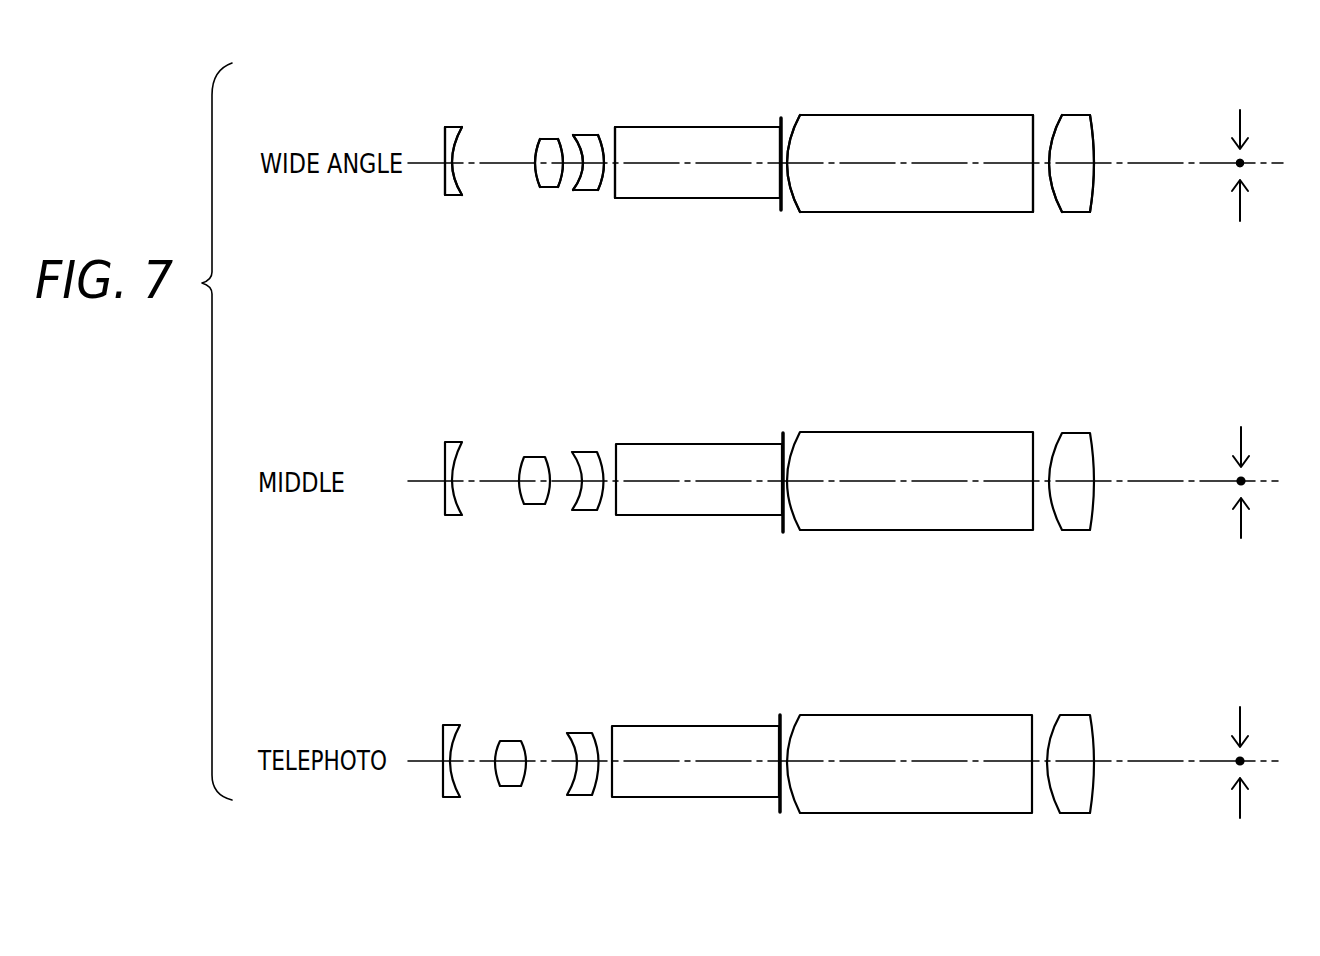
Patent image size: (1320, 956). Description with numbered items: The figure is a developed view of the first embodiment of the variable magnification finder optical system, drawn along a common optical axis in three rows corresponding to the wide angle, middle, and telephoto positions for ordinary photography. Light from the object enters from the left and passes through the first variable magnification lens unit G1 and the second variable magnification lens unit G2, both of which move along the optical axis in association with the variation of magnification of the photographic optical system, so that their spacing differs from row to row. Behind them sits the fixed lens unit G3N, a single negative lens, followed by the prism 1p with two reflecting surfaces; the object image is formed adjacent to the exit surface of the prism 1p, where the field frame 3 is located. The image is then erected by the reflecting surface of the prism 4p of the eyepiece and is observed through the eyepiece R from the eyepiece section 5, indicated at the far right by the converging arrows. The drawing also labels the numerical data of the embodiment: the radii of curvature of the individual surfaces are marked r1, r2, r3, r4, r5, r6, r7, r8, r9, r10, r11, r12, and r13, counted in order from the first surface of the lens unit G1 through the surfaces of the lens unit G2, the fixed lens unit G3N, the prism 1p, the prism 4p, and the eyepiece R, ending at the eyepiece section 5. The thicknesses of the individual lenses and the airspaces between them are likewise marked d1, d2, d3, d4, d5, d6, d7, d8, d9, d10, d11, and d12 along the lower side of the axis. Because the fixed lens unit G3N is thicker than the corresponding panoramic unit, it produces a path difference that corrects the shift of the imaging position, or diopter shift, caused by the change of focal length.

The first variable magnification lens unit G1 is at (452, 127).
The second variable magnification lens unit G2 is at (545, 139).
The fixed lens unit G3N is at (588, 135).
The prism 1p is at (680, 127).
The field frame 3 is at (781, 118).
The prism of the eyepiece 4p is at (880, 115).
The eyepiece R is at (1078, 115).
The eyepiece section 5 is at (1240, 118).
The radius of curvature r1 is at (445, 148).
The radius of curvature r2 is at (462, 148).
The radius of curvature r3 is at (533, 152).
The radius of curvature r4 is at (566, 148).
The radius of curvature r5 is at (580, 142).
The radius of curvature r6 is at (603, 142).
The radius of curvature r7 is at (616, 128).
The radius of curvature r8 is at (779, 150).
The radius of curvature r9 is at (792, 150).
The radius of curvature r10 is at (1033, 128).
The radius of curvature r11 is at (1052, 142).
The radius of curvature r12 is at (1096, 130).
The radius of curvature r13 is at (1241, 163).
The thickness or airspace d1 is at (452, 172).
The thickness or airspace d2 is at (495, 168).
The thickness or airspace d3 is at (545, 170).
The thickness or airspace d4 is at (570, 170).
The thickness or airspace d5 is at (591, 172).
The thickness or airspace d6 is at (610, 172).
The thickness or airspace d7 is at (688, 168).
The thickness or airspace d8 is at (785, 170).
The thickness or airspace d9 is at (920, 168).
The thickness or airspace d10 is at (1042, 170).
The thickness or airspace d11 is at (1086, 170).
The thickness or airspace d12 is at (1163, 170).